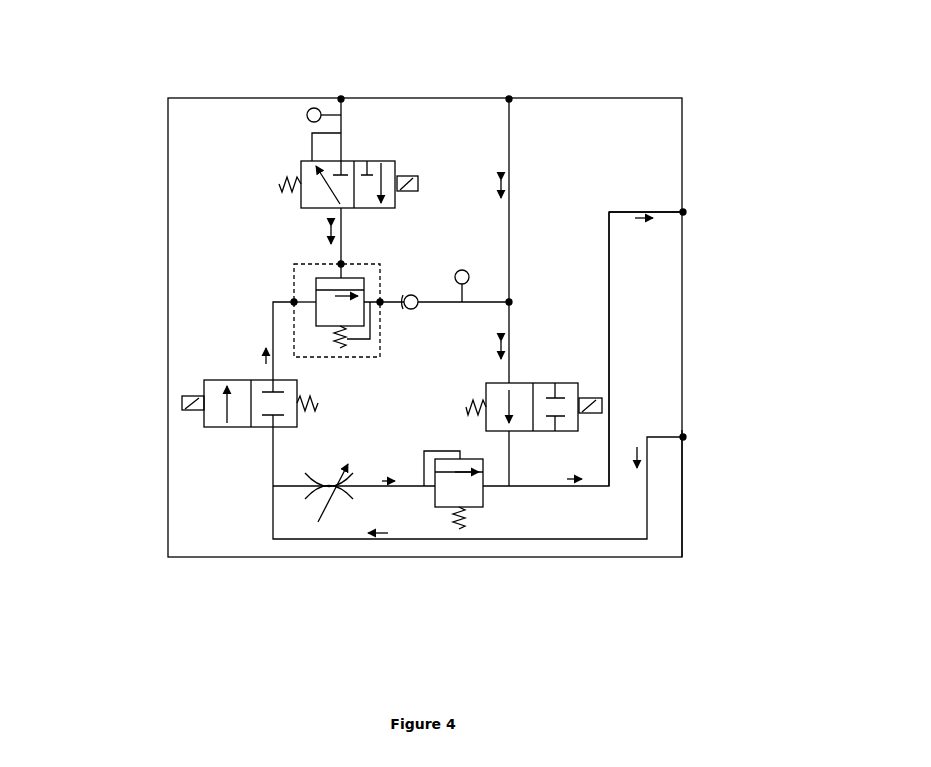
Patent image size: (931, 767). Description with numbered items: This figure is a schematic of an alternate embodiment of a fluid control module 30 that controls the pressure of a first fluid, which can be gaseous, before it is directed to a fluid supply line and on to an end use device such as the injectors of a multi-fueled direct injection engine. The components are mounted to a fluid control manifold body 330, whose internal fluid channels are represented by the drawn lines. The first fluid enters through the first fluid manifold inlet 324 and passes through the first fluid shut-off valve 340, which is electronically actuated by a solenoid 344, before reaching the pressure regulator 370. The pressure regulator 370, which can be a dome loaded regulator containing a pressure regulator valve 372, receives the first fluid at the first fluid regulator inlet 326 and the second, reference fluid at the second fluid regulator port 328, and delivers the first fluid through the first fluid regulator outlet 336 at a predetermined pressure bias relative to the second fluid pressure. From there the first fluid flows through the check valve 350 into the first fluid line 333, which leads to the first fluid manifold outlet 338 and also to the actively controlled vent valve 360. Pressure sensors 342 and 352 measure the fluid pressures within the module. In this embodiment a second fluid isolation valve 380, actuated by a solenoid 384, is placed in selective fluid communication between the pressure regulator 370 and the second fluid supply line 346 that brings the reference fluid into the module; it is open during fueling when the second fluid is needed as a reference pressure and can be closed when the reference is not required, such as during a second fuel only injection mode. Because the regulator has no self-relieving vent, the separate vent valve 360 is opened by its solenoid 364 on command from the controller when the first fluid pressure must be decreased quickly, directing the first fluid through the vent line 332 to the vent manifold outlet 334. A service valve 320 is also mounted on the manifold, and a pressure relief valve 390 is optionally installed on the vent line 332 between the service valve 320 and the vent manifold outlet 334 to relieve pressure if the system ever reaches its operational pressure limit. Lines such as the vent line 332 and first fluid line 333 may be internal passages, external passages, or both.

The fluid control module 30 is at (661, 70).
The service valve 320 is at (318, 522).
The first fluid manifold inlet 324 is at (688, 437).
The first fluid regulator inlet 326 is at (294, 303).
The second fluid regulator port 328 is at (341, 264).
The fluid control manifold body 330 is at (683, 502).
The vent line 332 is at (610, 340).
The first fluid line 333 is at (509, 210).
The vent manifold outlet 334 is at (683, 212).
The first fluid regulator outlet 336 is at (381, 304).
The first fluid manifold outlet 338 is at (509, 99).
The first fluid shut-off valve 340 is at (210, 427).
The pressure sensor 342 is at (307, 115).
The solenoid 344 is at (193, 395).
The supply line 346 is at (341, 99).
The check valve 350 is at (410, 295).
The pressure sensor 352 is at (462, 269).
The actively controlled vent valve 360 is at (542, 383).
The solenoid 364 is at (592, 414).
The pressure regulator 370 is at (261, 282).
The pressure regulator valve 372 is at (316, 286).
The second fluid isolation valve 380 is at (300, 168).
The solenoid 384 is at (409, 183).
The pressure relief valve 390 is at (484, 494).